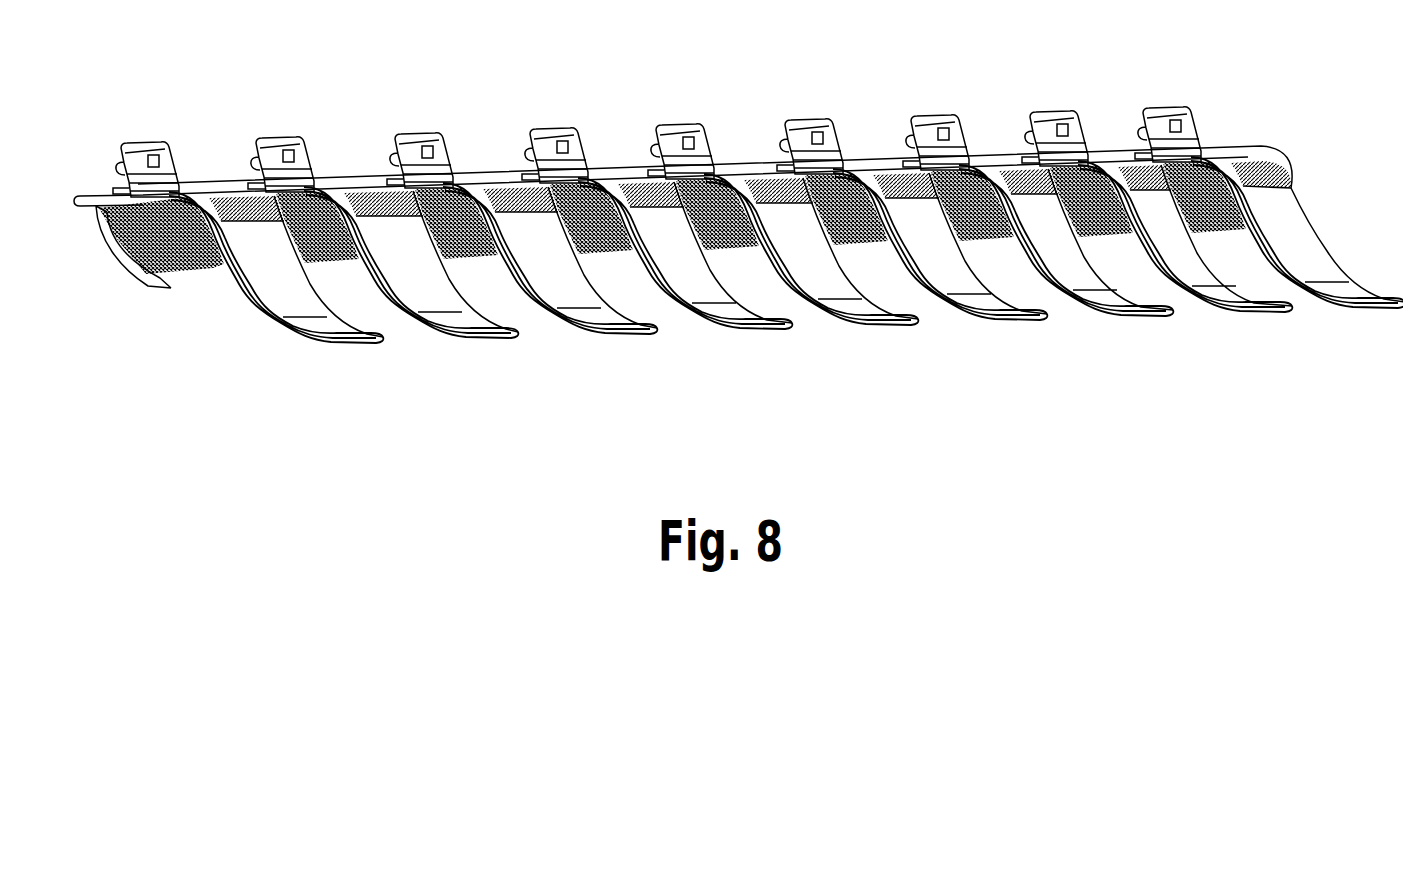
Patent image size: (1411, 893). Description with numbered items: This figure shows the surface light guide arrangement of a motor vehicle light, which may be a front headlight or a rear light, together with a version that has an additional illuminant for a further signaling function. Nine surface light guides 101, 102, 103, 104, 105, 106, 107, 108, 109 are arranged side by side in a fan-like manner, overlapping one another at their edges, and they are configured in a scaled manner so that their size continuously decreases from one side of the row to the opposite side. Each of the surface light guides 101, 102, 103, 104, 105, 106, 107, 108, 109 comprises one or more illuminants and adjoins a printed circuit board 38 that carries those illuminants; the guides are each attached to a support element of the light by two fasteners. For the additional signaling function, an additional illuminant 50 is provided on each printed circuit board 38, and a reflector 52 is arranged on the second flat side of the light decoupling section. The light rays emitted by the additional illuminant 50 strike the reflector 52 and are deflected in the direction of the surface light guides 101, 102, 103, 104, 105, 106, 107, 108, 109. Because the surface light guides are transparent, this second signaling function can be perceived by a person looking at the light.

The printed circuit board 38 is at (88, 186).
The additional illuminant 50 is at (115, 222).
The reflector 52 is at (161, 273).
The surface light guide 101 is at (1269, 180).
The surface light guide 102 is at (1157, 183).
The surface light guide 103 is at (1038, 186).
The surface light guide 104 is at (912, 190).
The surface light guide 105 is at (783, 195).
The surface light guide 106 is at (657, 199).
The surface light guide 107 is at (522, 203).
The surface light guide 108 is at (383, 208).
The surface light guide 109 is at (248, 212).